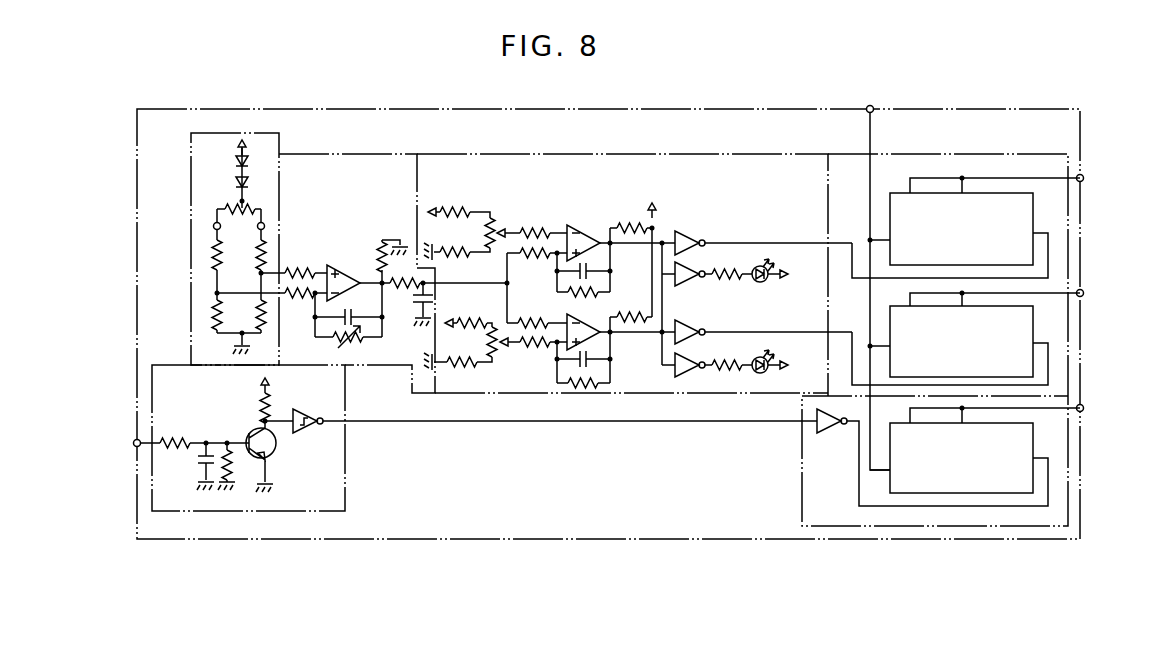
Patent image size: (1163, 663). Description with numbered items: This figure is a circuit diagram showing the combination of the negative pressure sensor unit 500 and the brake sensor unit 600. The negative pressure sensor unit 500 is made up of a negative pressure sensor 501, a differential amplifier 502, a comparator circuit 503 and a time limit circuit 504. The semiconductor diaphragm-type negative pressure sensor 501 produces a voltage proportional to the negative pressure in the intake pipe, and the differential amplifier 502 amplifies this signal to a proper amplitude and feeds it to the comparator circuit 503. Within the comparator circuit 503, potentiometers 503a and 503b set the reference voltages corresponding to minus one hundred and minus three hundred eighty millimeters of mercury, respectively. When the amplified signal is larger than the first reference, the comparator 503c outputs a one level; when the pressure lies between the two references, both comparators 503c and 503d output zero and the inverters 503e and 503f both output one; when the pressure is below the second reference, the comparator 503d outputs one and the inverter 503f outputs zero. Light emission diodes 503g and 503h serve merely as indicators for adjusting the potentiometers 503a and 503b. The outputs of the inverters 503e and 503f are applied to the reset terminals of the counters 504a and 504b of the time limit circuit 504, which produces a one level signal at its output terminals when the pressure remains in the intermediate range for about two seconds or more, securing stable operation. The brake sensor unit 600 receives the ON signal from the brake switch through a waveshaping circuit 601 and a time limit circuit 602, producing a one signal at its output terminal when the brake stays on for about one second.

The negative pressure sensor unit 500 is at (137, 165).
The negative pressure sensor 501 is at (222, 133).
The differential amplifier 502 is at (310, 153).
The comparator circuit 503 is at (552, 153).
The potentiometer 503a is at (497, 222).
The potentiometer 503b is at (500, 350).
The comparator 503c is at (580, 232).
The comparator 503d is at (578, 318).
The inverter 503e is at (688, 232).
The inverter 503f is at (695, 313).
The light emission diode 503g is at (767, 282).
The light emission diode 503h is at (762, 375).
The time limit circuit 504 is at (936, 154).
The counter 504a is at (1033, 217).
The counter 504b is at (1033, 322).
The brake sensor unit 600 is at (137, 468).
The waveshaping circuit 601 is at (348, 468).
The time limit circuit 602 is at (802, 440).